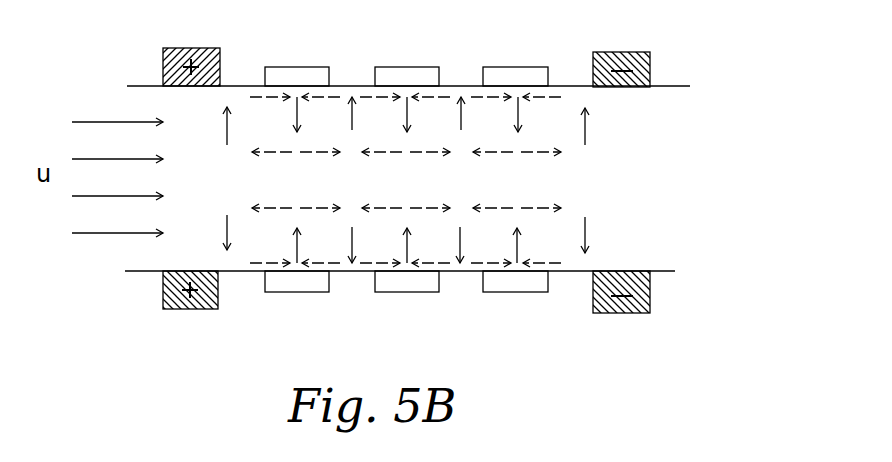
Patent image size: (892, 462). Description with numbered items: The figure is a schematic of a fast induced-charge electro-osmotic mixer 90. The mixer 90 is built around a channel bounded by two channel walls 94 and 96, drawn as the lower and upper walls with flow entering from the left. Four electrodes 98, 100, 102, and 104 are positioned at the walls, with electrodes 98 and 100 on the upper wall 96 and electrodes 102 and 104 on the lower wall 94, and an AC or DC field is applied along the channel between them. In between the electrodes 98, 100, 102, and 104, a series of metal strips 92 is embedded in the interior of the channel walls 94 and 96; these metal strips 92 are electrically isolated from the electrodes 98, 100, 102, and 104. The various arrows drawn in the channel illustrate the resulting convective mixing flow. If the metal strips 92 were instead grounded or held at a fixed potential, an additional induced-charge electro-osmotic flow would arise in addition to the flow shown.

The electro-osmotic mixer 90 is at (758, 142).
The metal strips 92 is at (300, 67).
The channel wall 94 is at (602, 273).
The channel wall 96 is at (601, 89).
The electrode 98 is at (197, 48).
The electrode 100 is at (630, 52).
The electrode 102 is at (188, 309).
The electrode 104 is at (630, 313).